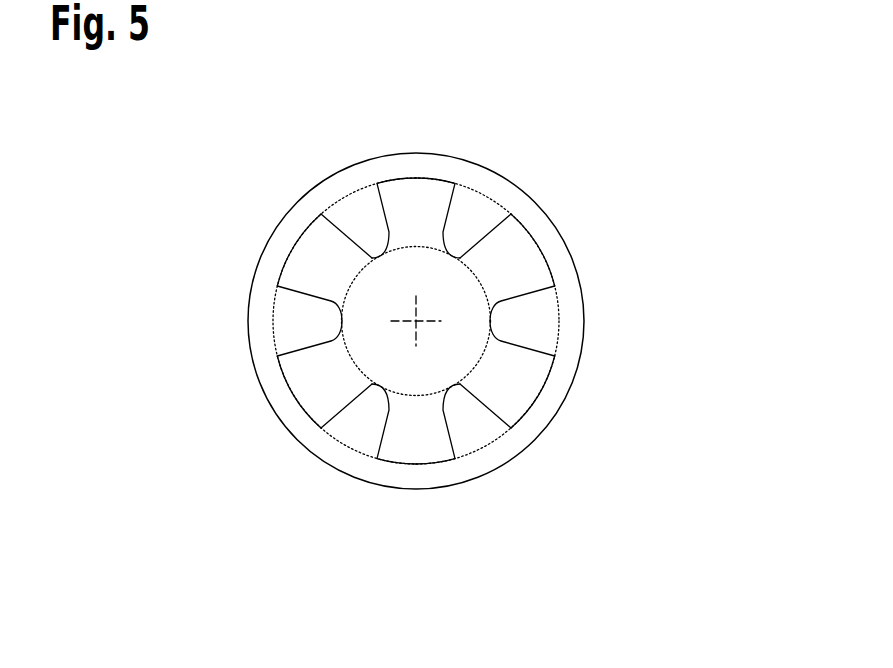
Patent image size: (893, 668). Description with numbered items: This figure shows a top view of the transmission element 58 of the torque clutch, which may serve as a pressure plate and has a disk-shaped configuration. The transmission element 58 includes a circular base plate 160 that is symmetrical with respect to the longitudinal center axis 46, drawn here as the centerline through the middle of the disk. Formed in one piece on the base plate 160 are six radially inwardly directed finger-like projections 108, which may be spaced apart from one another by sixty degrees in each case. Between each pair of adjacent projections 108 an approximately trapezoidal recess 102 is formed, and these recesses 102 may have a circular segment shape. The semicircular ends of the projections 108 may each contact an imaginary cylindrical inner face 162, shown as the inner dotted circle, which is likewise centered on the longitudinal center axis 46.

The transmission element 58 is at (677, 194).
The circular base plate 160 is at (296, 222).
The trapezoidal recess 102 is at (410, 197).
The finger-like projection 108 is at (362, 220).
The imaginary cylindrical inner face 162 is at (345, 348).
The longitudinal center axis 46 is at (418, 318).